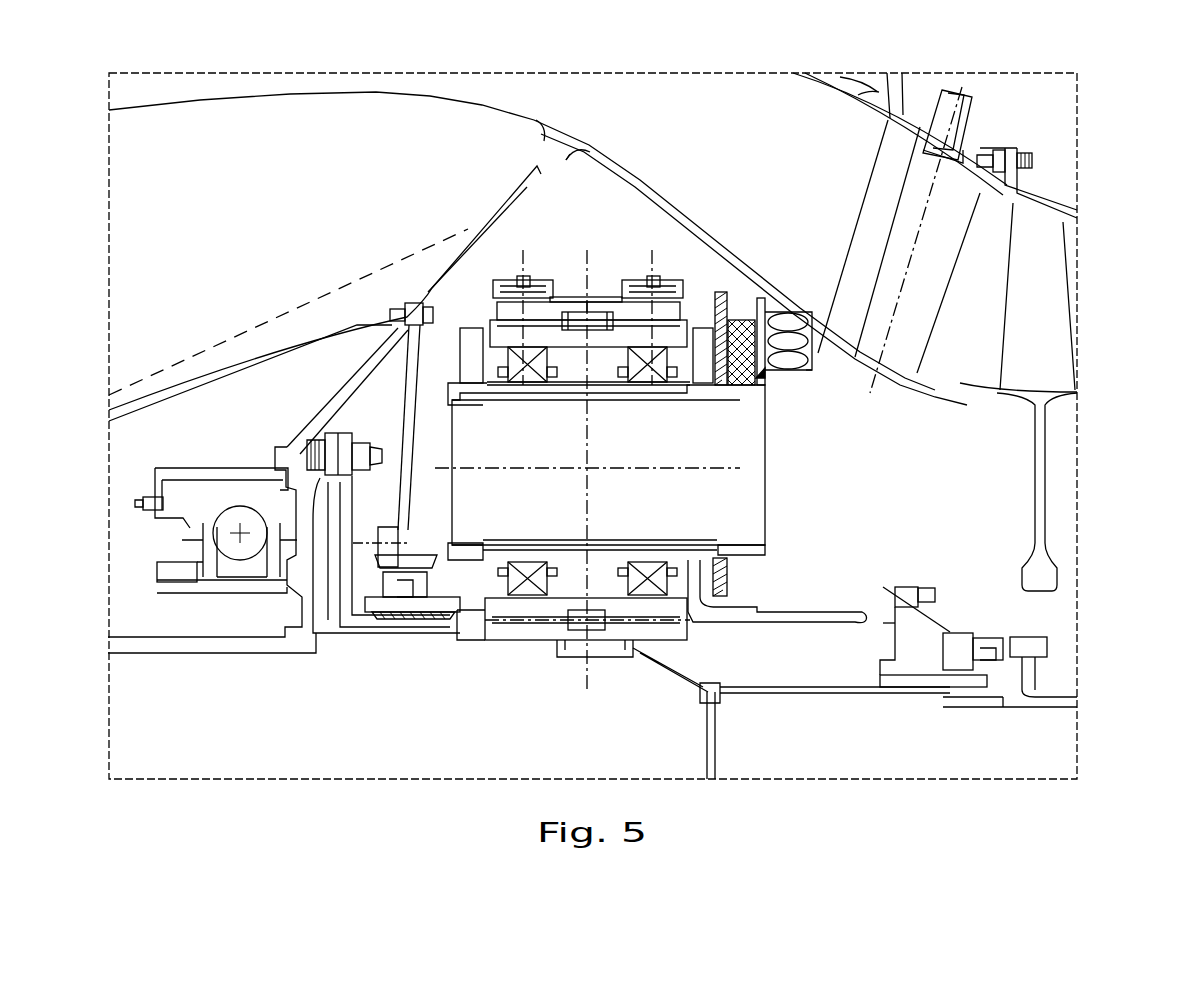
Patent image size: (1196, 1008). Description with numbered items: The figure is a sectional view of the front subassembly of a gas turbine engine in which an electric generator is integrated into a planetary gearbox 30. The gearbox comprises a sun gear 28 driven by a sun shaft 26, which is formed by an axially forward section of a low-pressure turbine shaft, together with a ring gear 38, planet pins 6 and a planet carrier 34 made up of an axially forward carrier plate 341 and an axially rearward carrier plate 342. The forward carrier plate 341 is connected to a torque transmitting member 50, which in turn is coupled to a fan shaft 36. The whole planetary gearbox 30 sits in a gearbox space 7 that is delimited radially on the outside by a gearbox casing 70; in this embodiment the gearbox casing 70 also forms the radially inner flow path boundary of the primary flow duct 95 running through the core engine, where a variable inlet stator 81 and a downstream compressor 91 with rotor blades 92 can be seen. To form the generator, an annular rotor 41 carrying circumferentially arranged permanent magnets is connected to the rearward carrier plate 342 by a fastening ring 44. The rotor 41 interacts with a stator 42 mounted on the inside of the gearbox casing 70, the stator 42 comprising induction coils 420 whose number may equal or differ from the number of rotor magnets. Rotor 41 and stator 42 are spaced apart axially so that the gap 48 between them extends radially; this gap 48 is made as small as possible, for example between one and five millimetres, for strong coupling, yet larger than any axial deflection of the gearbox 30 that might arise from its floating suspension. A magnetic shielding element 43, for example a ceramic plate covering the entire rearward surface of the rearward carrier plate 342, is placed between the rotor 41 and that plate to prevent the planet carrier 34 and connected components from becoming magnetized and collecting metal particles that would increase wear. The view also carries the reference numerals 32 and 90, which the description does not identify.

The planet pins 6 is at (600, 385).
The gearbox space 7 is at (629, 209).
The sun shaft 26 is at (782, 693).
The sun gear 28 is at (518, 633).
The planetary gearbox 30 is at (568, 262).
The bearing housing 32 is at (493, 610).
The planet carrier 34 is at (455, 348).
The fan shaft 36 is at (250, 653).
The ring gear 38 is at (600, 305).
The rotor 41 is at (780, 388).
The stator 42 is at (812, 372).
The magnetic shielding element 43 is at (719, 294).
The fastening ring 44 is at (770, 395).
The gap 48 is at (769, 330).
The torque transmitting member 50 is at (423, 620).
The gearbox casing 70 is at (684, 221).
The variable inlet stator 81 is at (917, 295).
The rotor hub 90 is at (695, 470).
The compressor 91 is at (1053, 187).
The rotor blades 92 is at (1048, 290).
The primary flow duct 95 is at (810, 168).
The axially forward carrier plate 341 is at (470, 343).
The axially rearward carrier plate 342 is at (703, 365).
The induction coils 420 is at (813, 348).